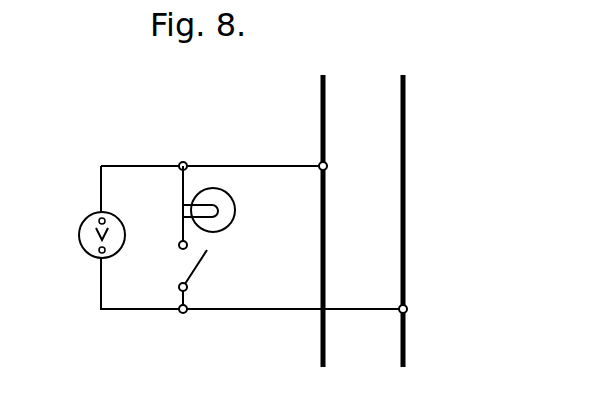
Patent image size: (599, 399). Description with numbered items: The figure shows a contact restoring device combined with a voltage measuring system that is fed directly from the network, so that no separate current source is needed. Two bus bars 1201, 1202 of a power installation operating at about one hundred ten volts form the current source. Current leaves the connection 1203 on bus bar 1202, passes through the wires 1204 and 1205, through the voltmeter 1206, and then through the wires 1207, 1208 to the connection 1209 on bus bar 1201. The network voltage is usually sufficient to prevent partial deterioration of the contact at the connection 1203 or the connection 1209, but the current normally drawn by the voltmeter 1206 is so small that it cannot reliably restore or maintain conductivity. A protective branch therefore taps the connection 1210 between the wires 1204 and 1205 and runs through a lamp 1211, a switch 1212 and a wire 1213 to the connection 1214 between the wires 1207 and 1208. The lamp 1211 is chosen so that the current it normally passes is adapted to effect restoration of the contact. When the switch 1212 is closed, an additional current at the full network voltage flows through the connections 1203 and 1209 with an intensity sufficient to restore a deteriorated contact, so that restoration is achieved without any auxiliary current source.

The bus bar 1201 is at (410, 140).
The bus bar 1202 is at (322, 105).
The connection 1203 is at (329, 169).
The wire 1204 is at (290, 158).
The wire 1205 is at (131, 165).
The voltmeter 1206 is at (79, 237).
The wire 1207 is at (138, 317).
The wire 1208 is at (287, 316).
The connection 1209 is at (412, 312).
The connection 1210 is at (188, 157).
The lamp 1211 is at (238, 209).
The switch 1212 is at (203, 264).
The wire 1213 is at (188, 296).
The connection 1214 is at (188, 316).